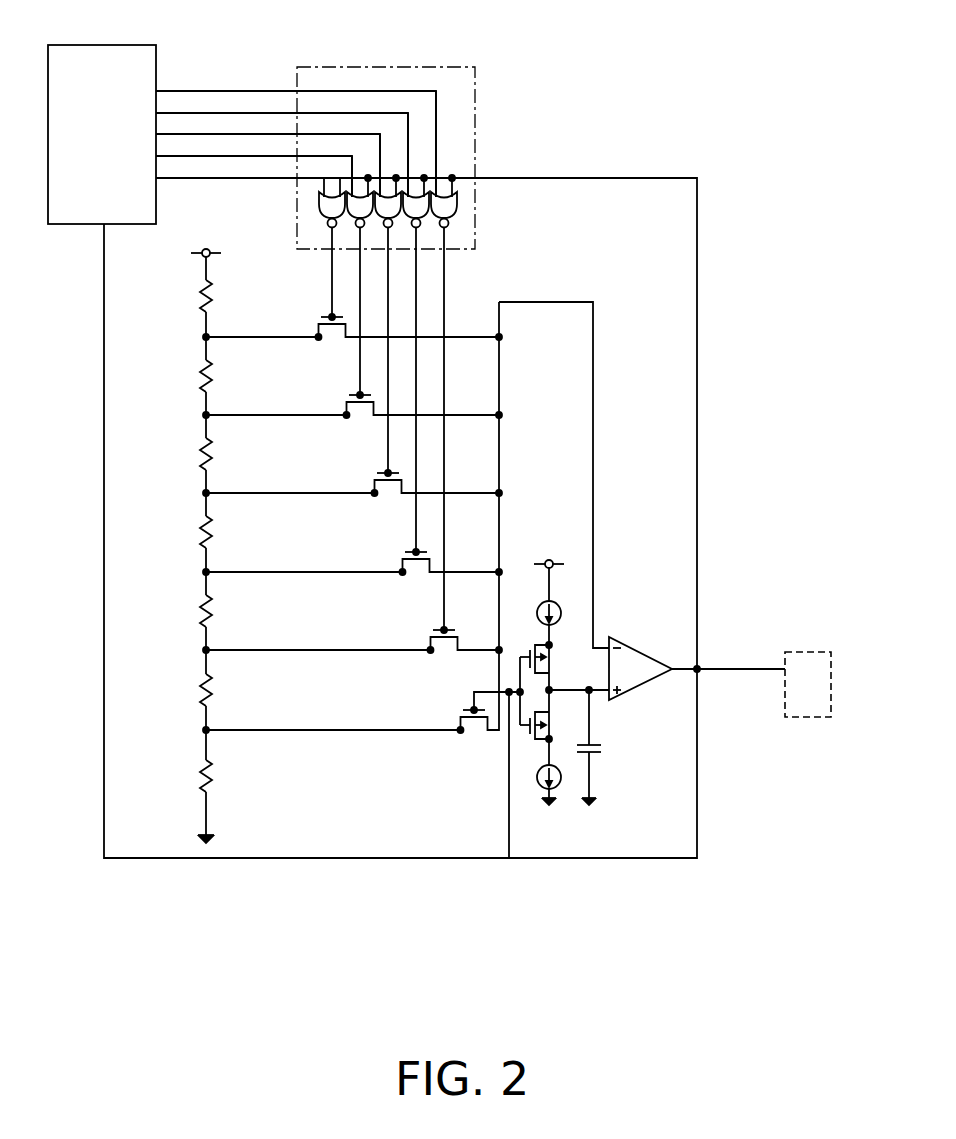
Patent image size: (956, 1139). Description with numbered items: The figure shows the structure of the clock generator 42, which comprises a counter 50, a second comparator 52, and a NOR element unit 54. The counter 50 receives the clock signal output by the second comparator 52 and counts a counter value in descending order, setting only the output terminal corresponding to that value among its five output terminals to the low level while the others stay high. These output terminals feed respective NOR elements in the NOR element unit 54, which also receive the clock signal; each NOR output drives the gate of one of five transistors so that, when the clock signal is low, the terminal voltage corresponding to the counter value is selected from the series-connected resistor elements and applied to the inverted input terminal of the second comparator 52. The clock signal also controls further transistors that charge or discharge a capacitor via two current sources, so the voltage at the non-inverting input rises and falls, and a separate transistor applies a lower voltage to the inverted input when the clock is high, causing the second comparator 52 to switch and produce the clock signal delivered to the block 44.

The clock generator 42 is at (420, 981).
The RS flip-flop 44 is at (829, 652).
The counter 50 is at (140, 45).
The second comparator 52 is at (641, 653).
The NOR element unit 54 is at (465, 67).